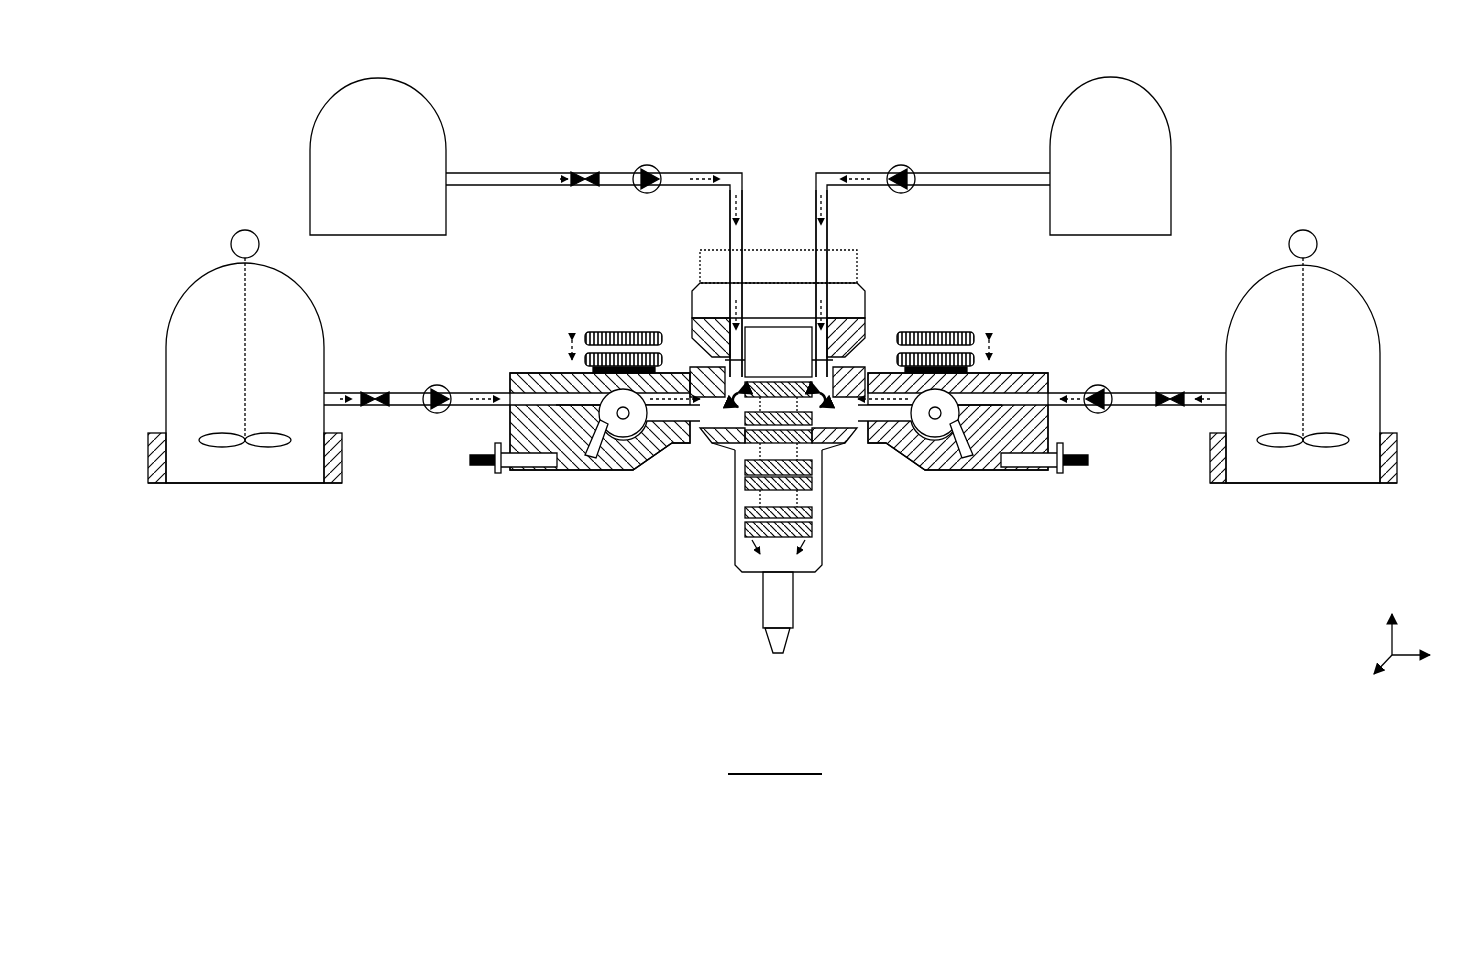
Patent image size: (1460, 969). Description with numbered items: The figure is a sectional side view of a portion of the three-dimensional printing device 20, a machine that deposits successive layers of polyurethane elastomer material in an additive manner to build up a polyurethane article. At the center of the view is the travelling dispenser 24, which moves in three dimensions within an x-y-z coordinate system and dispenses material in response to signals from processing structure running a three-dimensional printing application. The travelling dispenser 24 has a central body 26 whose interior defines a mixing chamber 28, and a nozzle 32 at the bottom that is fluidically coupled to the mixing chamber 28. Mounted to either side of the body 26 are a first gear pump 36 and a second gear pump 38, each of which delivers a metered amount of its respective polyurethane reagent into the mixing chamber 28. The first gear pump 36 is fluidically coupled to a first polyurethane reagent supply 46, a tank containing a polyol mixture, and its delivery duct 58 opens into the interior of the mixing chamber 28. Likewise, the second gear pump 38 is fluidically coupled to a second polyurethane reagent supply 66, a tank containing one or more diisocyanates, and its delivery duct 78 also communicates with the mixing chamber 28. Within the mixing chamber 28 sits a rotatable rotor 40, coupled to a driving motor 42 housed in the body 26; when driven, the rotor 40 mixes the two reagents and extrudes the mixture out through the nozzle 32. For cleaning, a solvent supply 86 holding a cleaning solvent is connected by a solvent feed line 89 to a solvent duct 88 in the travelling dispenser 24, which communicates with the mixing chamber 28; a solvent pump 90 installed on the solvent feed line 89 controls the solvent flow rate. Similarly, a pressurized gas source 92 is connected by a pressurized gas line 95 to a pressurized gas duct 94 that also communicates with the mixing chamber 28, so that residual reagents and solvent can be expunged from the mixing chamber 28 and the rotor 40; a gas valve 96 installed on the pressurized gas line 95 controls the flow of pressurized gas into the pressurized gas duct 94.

The 3D printing device 20 is at (1380, 81).
The travelling dispenser 24 is at (544, 585).
The central body 26 is at (712, 332).
The mixing chamber 28 is at (750, 549).
The nozzle 32 is at (784, 643).
The first gear pump 36 is at (575, 473).
The second gear pump 38 is at (975, 473).
The rotor 40 is at (745, 509).
The driving motor 42 is at (790, 335).
The first polyurethane reagent supply 46 is at (183, 373).
The delivery duct 58 is at (713, 434).
The second polyurethane reagent supply 66 is at (1336, 301).
The delivery duct 78 is at (846, 434).
The solvent supply 86 is at (1158, 160).
The solvent duct 88 is at (836, 271).
The solvent feed line 89 is at (993, 175).
The solvent pump 90 is at (899, 167).
The pressurized gas source 92 is at (324, 138).
The pressurized gas duct 94 is at (718, 271).
The pressurized gas line 95 is at (523, 172).
The gas valve 96 is at (592, 170).